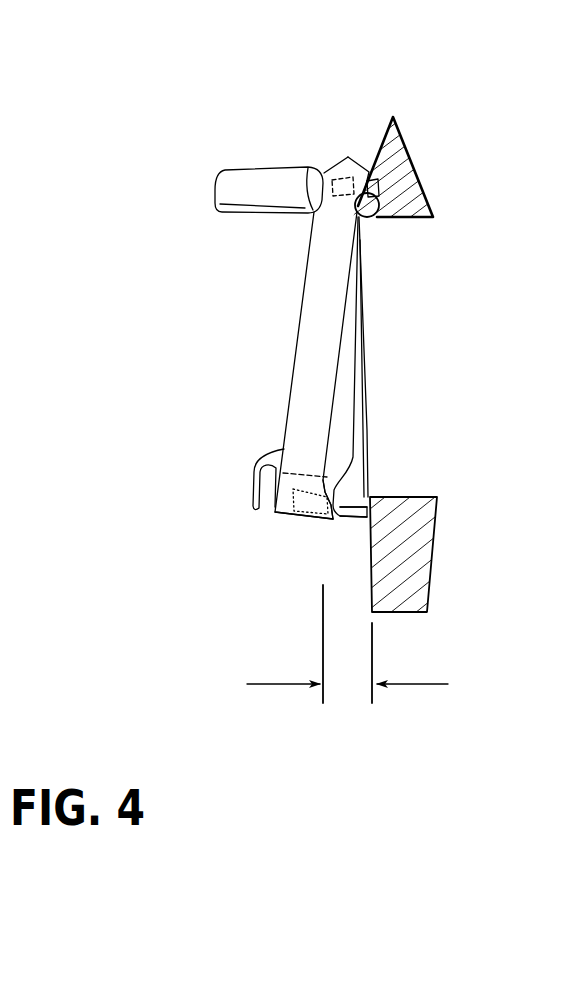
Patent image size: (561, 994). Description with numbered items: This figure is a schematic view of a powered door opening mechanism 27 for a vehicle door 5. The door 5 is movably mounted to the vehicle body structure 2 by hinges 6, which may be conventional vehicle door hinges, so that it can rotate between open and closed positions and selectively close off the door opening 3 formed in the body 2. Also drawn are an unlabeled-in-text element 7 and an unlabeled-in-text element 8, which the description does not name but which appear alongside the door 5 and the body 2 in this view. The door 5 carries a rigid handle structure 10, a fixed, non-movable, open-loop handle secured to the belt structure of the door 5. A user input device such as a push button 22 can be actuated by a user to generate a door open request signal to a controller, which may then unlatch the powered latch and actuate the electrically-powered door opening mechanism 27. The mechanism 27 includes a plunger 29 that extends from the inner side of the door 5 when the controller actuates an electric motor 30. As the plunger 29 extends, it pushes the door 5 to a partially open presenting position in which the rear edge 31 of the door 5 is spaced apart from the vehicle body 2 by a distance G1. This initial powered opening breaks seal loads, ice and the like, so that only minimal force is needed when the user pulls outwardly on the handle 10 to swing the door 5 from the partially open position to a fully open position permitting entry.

The body structure 2 is at (371, 571).
The door opening 3 is at (402, 335).
The vehicle door 5 is at (290, 263).
The hinges 6 is at (366, 178).
The strap 7 is at (347, 362).
The lever arm 8 is at (293, 367).
The rigid handle structure 10 is at (253, 473).
The push button 22 is at (270, 511).
The powered door opening mechanism 27 is at (298, 524).
The plunger 29 is at (342, 520).
The electric motor 30 is at (297, 512).
The rear edge 31 is at (303, 523).
The distance G1 is at (367, 644).